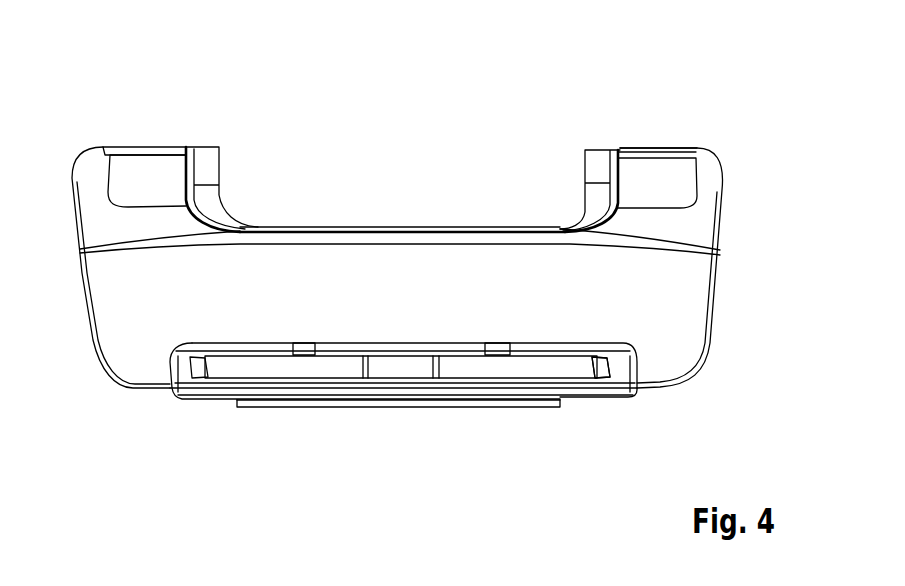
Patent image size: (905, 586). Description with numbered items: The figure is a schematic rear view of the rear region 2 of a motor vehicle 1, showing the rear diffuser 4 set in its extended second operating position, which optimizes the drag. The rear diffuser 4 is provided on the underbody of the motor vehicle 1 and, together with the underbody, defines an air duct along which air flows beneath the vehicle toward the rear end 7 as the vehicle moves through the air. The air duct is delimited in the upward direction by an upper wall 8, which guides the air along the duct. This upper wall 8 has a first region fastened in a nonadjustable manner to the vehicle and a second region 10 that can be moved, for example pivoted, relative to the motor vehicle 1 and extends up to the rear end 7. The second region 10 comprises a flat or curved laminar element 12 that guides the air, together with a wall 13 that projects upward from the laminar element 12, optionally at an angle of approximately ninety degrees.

The motor vehicle 1 is at (426, 246).
The rear region 2 is at (690, 273).
The rear end 7 is at (375, 253).
The upper wall 8 is at (287, 408).
The second region 10 is at (460, 407).
The laminar element 12 is at (340, 403).
The rear diffuser 4 is at (520, 387).
The wall 13 is at (570, 370).